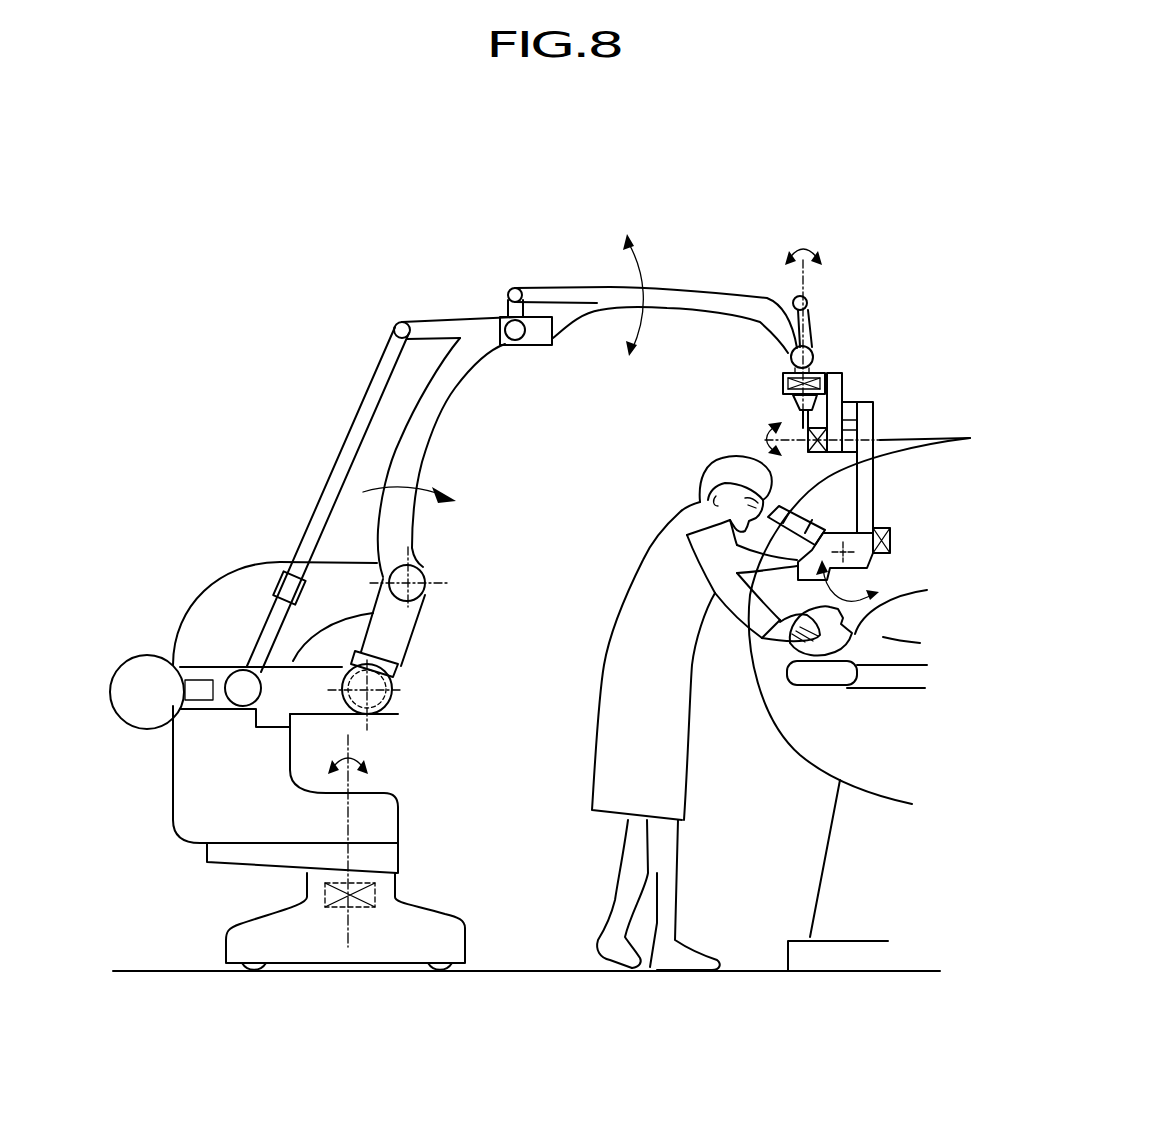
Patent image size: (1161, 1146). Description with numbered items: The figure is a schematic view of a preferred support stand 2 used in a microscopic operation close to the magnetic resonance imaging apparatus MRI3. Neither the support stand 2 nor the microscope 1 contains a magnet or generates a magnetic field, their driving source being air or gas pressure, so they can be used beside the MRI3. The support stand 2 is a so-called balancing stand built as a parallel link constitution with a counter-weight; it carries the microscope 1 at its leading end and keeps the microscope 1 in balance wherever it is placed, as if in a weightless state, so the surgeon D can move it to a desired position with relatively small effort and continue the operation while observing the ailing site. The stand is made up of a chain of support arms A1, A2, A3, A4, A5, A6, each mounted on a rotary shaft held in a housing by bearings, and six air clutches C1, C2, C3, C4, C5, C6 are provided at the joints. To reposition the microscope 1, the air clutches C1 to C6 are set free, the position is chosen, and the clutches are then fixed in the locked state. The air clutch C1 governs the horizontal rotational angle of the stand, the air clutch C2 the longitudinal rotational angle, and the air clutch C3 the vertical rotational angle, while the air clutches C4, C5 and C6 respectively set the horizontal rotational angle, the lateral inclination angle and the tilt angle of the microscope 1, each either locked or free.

The support stand 2 is at (545, 250).
The microscope 1 is at (865, 568).
The support arm A1 is at (182, 763).
The support arm A2 is at (282, 708).
The support arm A3 is at (427, 413).
The support arm A4 is at (712, 288).
The support arm A5 is at (830, 384).
The support arm A6 is at (868, 410).
The air clutch C1 is at (375, 892).
The air clutch C2 is at (428, 578).
The air clutch C3 is at (398, 691).
The air clutch C4 is at (783, 387).
The air clutch C5 is at (817, 428).
The air clutch C6 is at (895, 533).
The surgeon D is at (655, 553).
The MRI MRI3 is at (800, 753).